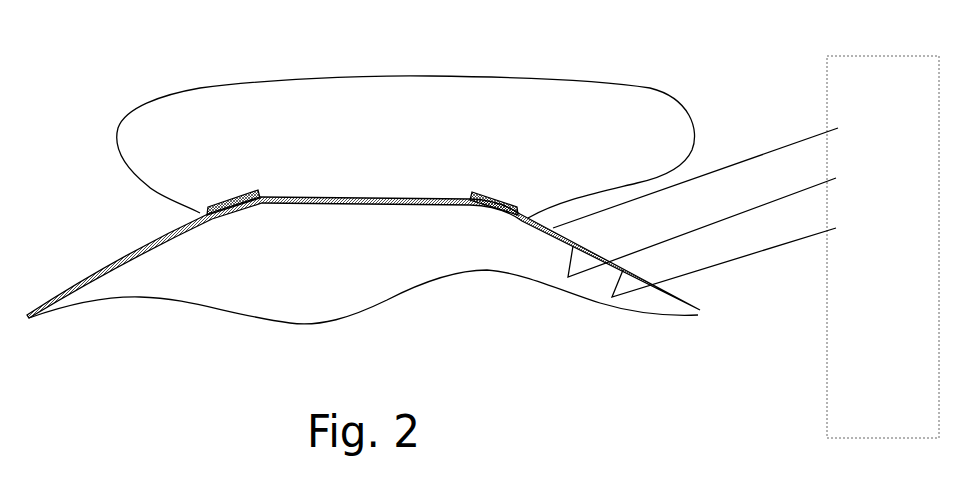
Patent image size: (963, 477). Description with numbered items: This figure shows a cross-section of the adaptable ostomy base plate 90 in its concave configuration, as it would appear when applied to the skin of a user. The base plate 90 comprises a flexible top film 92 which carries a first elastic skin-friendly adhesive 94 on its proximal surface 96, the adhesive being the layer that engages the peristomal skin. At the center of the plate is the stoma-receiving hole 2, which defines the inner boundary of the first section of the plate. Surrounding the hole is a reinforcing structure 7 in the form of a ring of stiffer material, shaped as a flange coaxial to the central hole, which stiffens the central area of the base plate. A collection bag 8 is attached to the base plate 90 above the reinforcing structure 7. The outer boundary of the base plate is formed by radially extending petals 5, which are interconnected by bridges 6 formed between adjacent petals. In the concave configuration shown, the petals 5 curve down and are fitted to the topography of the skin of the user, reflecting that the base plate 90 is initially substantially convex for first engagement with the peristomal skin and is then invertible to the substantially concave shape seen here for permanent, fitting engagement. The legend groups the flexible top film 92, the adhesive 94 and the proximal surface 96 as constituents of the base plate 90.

The stoma-receiving hole 2 is at (338, 197).
The petals 5 is at (310, 304).
The bridges 6 is at (460, 281).
The reinforcing structure 7 is at (483, 190).
The collection bag 8 is at (432, 75).
The adaptable ostomy base plate 90 is at (883, 247).
The flexible top film 92 is at (710, 172).
The first elastic skin-friendly adhesive 94 is at (717, 222).
The proximal surface 96 is at (739, 257).